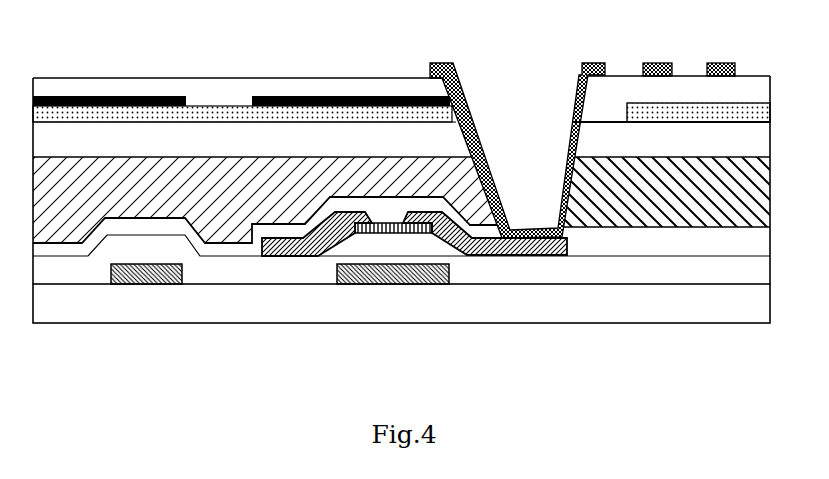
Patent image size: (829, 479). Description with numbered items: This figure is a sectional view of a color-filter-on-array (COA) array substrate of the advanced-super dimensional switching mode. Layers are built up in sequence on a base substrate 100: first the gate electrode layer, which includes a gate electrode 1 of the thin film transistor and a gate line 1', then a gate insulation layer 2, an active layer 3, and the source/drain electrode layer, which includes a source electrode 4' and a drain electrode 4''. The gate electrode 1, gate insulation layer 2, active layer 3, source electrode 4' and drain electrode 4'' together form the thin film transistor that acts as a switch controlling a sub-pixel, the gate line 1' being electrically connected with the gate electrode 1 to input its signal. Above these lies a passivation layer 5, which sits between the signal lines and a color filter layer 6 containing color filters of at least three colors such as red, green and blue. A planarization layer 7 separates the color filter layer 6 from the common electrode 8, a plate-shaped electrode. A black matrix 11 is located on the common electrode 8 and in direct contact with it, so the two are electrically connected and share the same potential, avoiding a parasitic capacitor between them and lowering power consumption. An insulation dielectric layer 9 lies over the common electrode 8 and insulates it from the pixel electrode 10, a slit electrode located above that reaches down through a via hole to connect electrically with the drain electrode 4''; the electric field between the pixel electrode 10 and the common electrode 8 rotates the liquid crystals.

The base substrate 100 is at (83, 299).
The gate electrode 1 is at (393, 322).
The gate line 1' is at (146, 322).
The gate insulation layer 2 is at (253, 278).
The active layer 3 is at (398, 235).
The source electrode 4' is at (317, 297).
The drain electrode 4'' is at (485, 297).
The passivation layer 5 is at (233, 250).
The color filter layer 6 is at (698, 205).
The planarization layer 7 is at (121, 139).
The common electrode 8 is at (193, 107).
The insulation dielectric layer 9 is at (346, 93).
The pixel electrode 10 is at (568, 122).
The black matrix 11 is at (272, 97).